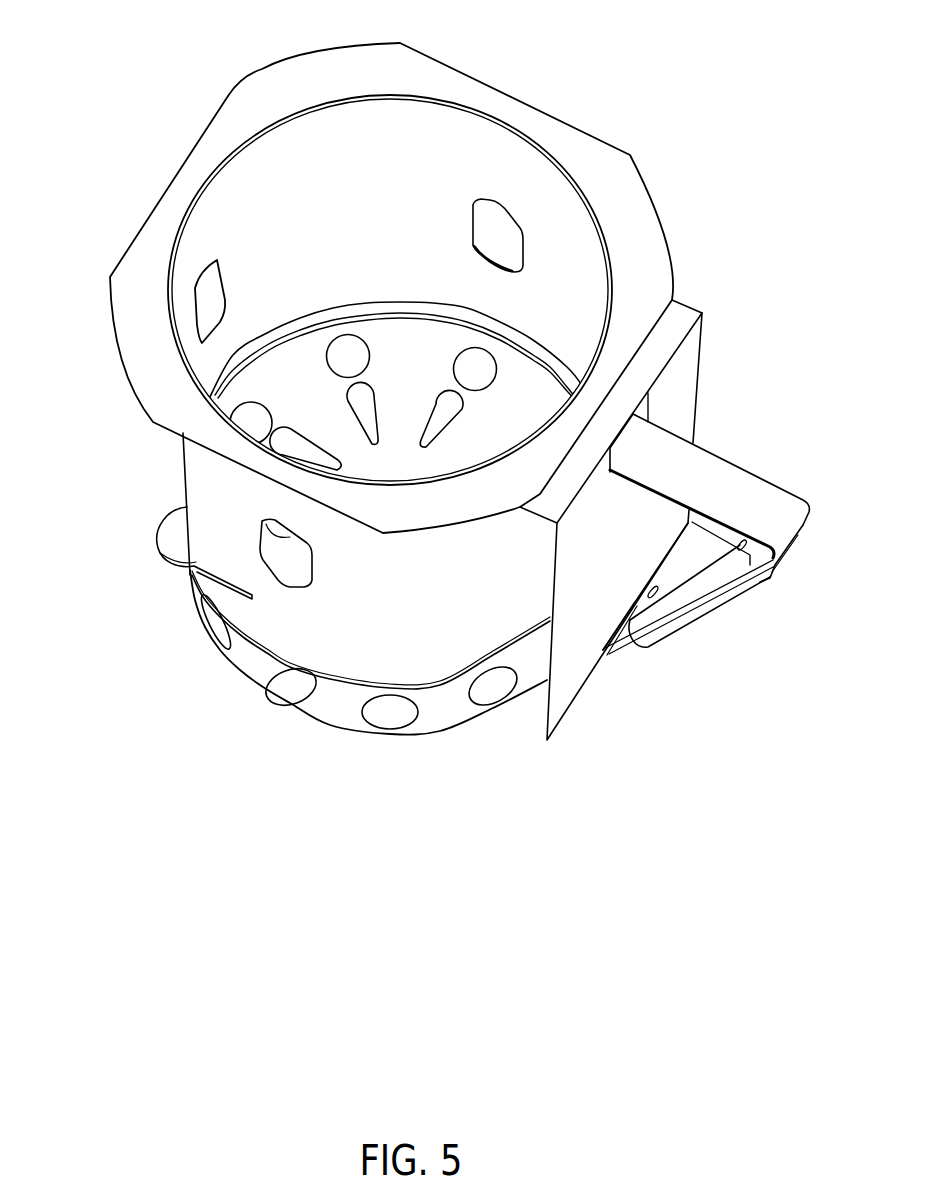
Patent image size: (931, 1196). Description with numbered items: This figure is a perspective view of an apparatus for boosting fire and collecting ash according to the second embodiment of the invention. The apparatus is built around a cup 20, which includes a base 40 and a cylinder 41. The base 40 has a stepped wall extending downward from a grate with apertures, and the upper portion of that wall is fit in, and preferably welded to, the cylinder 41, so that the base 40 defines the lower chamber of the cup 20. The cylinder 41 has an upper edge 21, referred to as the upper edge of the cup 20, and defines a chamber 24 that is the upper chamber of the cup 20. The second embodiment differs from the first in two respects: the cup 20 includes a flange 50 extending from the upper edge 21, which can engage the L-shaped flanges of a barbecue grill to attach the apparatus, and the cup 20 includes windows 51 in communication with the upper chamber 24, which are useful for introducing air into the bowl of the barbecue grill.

The cup 20 is at (82, 634).
The upper edge 21 is at (183, 213).
The chamber 24 is at (461, 140).
The base 40 is at (246, 667).
The cylinder 41 is at (227, 597).
The flange 50 is at (289, 90).
The windows 51 is at (500, 227).